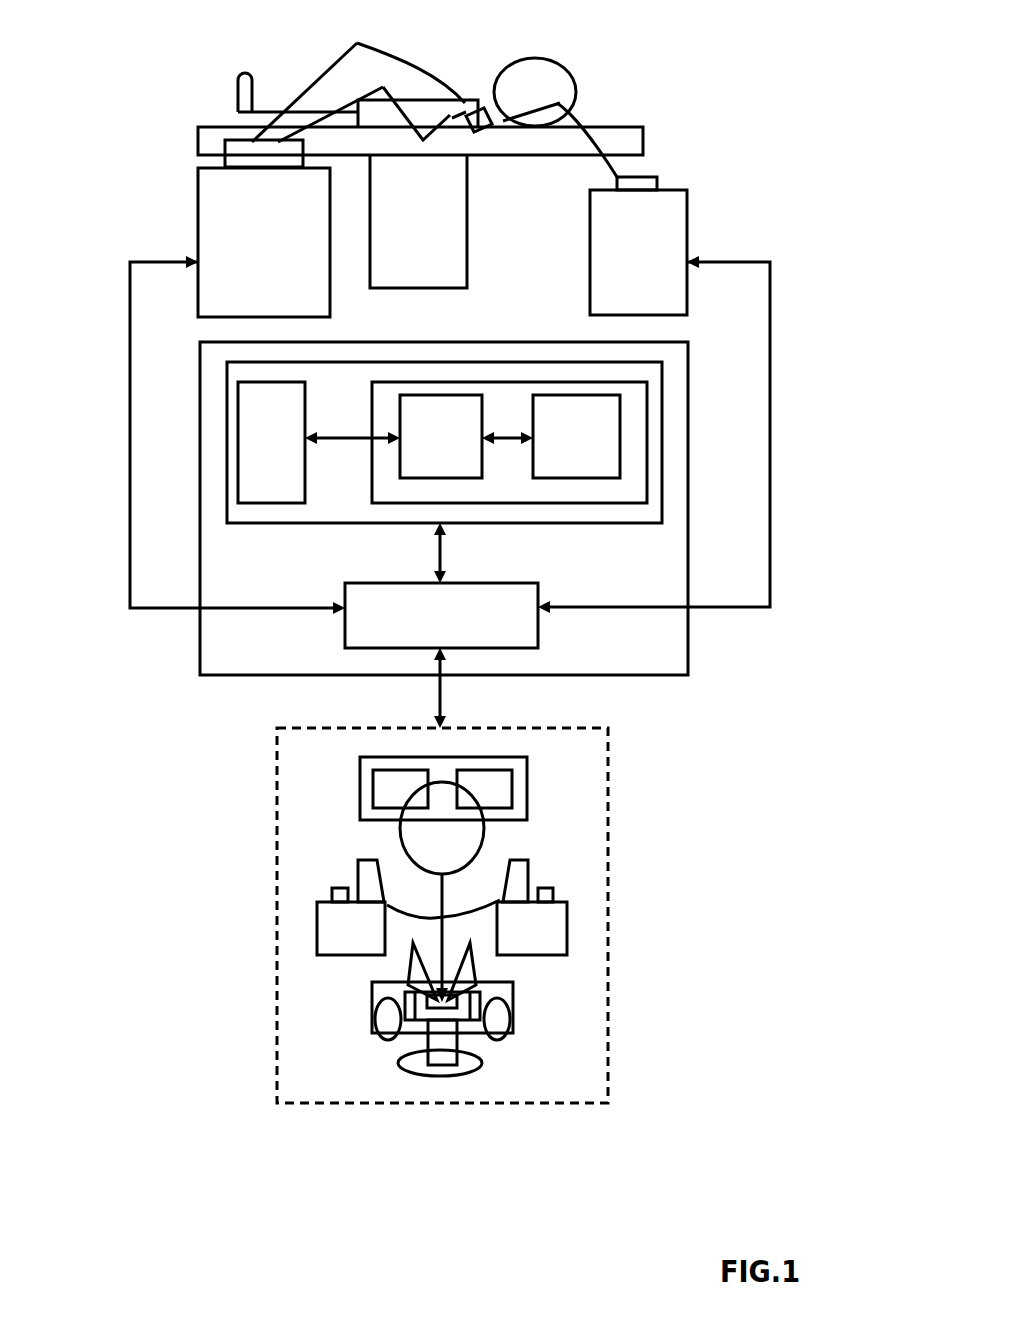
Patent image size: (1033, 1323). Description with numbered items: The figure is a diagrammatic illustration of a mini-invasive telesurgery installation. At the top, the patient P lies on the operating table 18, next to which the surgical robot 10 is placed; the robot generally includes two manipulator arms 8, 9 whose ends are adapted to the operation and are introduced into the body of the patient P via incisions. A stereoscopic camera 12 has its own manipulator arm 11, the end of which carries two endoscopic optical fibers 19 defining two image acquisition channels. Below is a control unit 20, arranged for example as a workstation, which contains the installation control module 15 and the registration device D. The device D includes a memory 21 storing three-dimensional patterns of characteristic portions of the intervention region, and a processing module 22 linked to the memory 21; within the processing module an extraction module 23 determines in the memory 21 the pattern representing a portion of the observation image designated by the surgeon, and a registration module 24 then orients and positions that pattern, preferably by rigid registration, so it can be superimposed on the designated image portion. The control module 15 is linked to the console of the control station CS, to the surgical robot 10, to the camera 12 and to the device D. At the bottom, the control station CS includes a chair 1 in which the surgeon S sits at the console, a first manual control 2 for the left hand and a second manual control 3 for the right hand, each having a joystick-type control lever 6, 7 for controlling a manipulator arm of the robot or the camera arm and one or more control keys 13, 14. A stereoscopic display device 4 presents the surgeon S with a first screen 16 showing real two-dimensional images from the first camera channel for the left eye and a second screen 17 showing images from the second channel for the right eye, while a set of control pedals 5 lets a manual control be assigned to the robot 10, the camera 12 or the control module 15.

The patient P is at (237, 90).
The operating table 18 is at (198, 140).
The manipulator arm 8 is at (320, 72).
The surgical robot 10 is at (198, 208).
The manipulator arm 9 is at (450, 113).
The endoscopic optical fibers 19 is at (480, 131).
The manipulator arm 11 is at (573, 112).
The stereoscopic camera 12 is at (688, 208).
The control unit 20 is at (688, 377).
The registration device D is at (226, 398).
The memory 21 is at (238, 462).
The processing module 22 is at (647, 437).
The extraction module 23 is at (400, 478).
The registration module 24 is at (593, 478).
The control module 15 is at (345, 635).
The control station CS is at (277, 1036).
The display device 4 is at (497, 753).
The first screen 16 is at (373, 782).
The second screen 17 is at (512, 797).
The surgeon S is at (443, 913).
The control lever 6 is at (357, 873).
The control key 13 is at (333, 888).
The first manual control 2 is at (317, 930).
The control lever 7 is at (528, 873).
The control key 14 is at (553, 888).
The second manual control 3 is at (567, 930).
The set of control pedals 5 is at (513, 992).
The chair 1 is at (441, 1050).